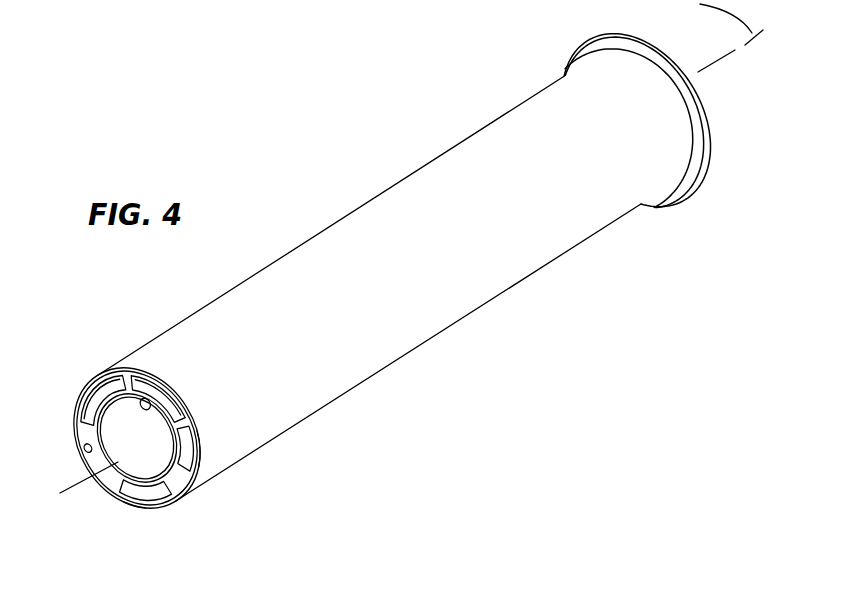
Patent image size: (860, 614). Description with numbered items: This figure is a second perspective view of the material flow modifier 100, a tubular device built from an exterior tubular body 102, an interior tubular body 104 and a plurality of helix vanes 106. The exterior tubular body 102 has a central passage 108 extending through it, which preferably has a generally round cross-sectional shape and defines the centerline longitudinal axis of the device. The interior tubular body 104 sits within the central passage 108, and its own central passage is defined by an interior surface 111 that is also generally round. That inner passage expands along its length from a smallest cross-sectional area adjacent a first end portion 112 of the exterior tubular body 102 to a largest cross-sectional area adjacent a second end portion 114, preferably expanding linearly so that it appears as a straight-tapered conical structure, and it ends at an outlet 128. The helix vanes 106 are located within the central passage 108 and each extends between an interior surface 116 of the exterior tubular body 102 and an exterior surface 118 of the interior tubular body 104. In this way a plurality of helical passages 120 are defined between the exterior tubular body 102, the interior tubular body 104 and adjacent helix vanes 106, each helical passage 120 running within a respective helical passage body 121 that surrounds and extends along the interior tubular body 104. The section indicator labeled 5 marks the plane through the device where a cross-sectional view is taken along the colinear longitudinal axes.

The material flow modifier 100 is at (382, 150).
The exterior tubular body 102 is at (528, 125).
The interior tubular body 104 is at (150, 483).
The helix vanes 106 is at (107, 373).
The central passage 108 is at (128, 495).
The interior surface 111 is at (193, 423).
The first end portion 112 is at (677, 165).
The second end portion 114 is at (203, 448).
The interior surface 116 is at (140, 437).
The exterior surface 118 is at (182, 463).
The helical passages 120 is at (140, 502).
The helical passage body 121 is at (137, 378).
The outlet 128 is at (150, 462).
The section line 5 is at (60, 493).